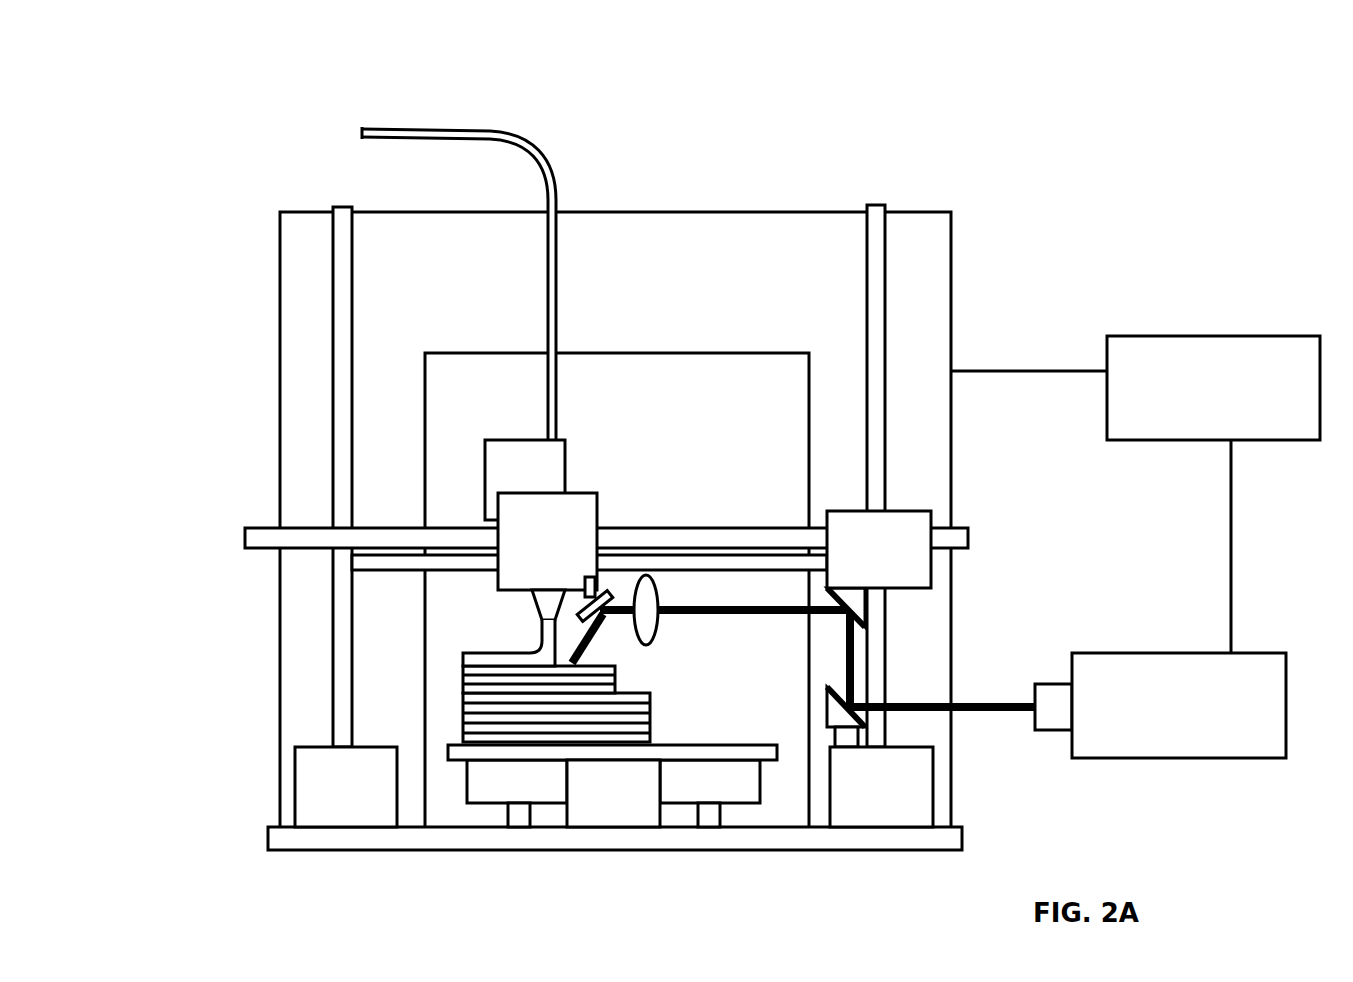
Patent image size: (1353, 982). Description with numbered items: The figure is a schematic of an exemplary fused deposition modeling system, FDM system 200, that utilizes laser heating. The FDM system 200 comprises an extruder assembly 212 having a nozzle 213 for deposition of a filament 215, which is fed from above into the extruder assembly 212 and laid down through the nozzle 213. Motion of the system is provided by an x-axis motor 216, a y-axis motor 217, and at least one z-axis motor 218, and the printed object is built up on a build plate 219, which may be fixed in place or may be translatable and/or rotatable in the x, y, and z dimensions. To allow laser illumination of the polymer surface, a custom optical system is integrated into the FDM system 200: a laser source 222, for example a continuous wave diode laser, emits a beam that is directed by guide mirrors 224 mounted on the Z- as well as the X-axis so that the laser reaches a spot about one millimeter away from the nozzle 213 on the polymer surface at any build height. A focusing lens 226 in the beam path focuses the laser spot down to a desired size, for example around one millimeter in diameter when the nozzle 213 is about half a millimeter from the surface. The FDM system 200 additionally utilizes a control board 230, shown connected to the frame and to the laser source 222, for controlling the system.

The FDM system 200 is at (172, 93).
The extruder assembly 212 is at (564, 526).
The nozzle 213 is at (529, 605).
The filament 215 is at (444, 268).
The x-axis motor 216 is at (933, 567).
The y-axis motor 217 is at (596, 824).
The z-axis motor 218 is at (324, 812).
The build plate 219 is at (733, 759).
The laser source 222 is at (1160, 705).
The guide mirror 224 is at (611, 585).
The focusing lens 226 is at (645, 597).
The control board 230 is at (1213, 494).